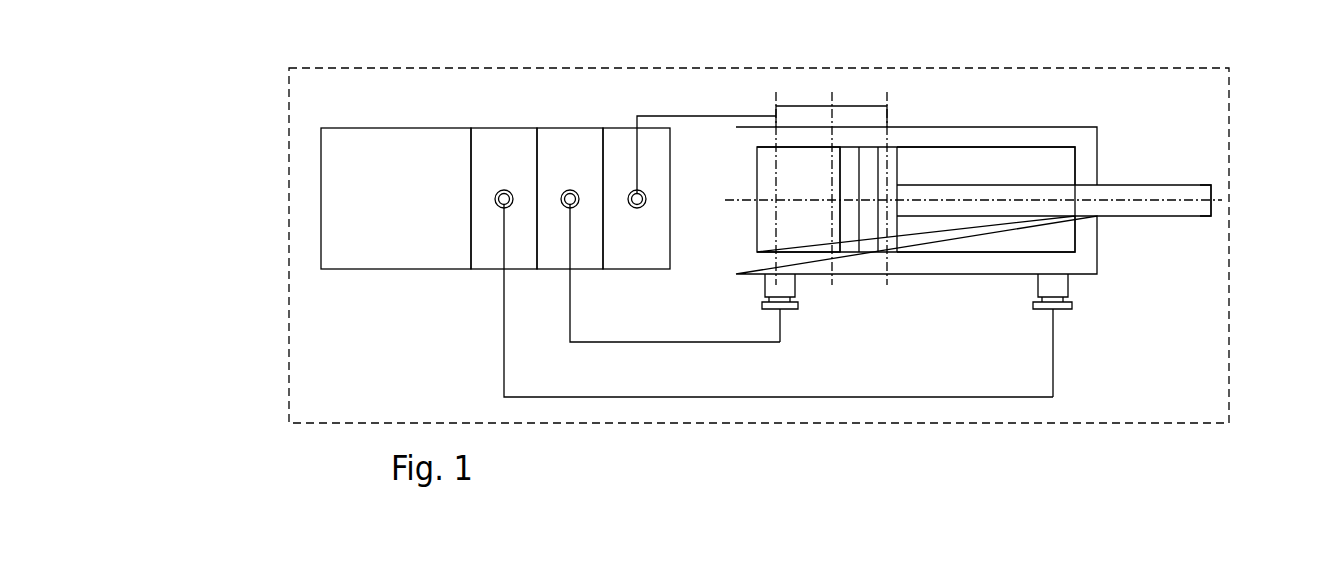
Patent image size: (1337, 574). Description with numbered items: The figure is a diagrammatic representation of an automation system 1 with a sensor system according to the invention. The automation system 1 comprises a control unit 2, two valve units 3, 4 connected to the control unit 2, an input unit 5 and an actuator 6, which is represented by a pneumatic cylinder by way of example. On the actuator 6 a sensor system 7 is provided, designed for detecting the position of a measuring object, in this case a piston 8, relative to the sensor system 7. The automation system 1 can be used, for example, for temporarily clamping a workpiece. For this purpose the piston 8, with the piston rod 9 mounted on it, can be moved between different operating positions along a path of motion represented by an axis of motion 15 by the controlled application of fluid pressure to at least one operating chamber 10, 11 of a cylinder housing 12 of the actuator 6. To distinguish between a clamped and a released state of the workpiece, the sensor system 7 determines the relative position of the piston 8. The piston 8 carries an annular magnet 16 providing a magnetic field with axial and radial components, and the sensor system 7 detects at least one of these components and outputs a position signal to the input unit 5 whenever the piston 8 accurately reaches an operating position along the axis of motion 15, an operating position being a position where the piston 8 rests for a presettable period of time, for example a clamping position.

The automation system 1 is at (1229, 109).
The control unit 2 is at (387, 157).
The valve unit 3 is at (507, 145).
The valve unit 4 is at (577, 143).
The input unit 5 is at (616, 140).
The actuator 6 is at (966, 279).
The sensor system 7 is at (870, 115).
The piston 8 is at (851, 157).
The piston rod 9 is at (1156, 188).
The operating chamber 10 is at (813, 157).
The operating chamber 11 is at (1017, 160).
The cylinder housing 12 is at (1087, 253).
The axis of motion 15 is at (1190, 201).
The annular magnet 16 is at (872, 172).